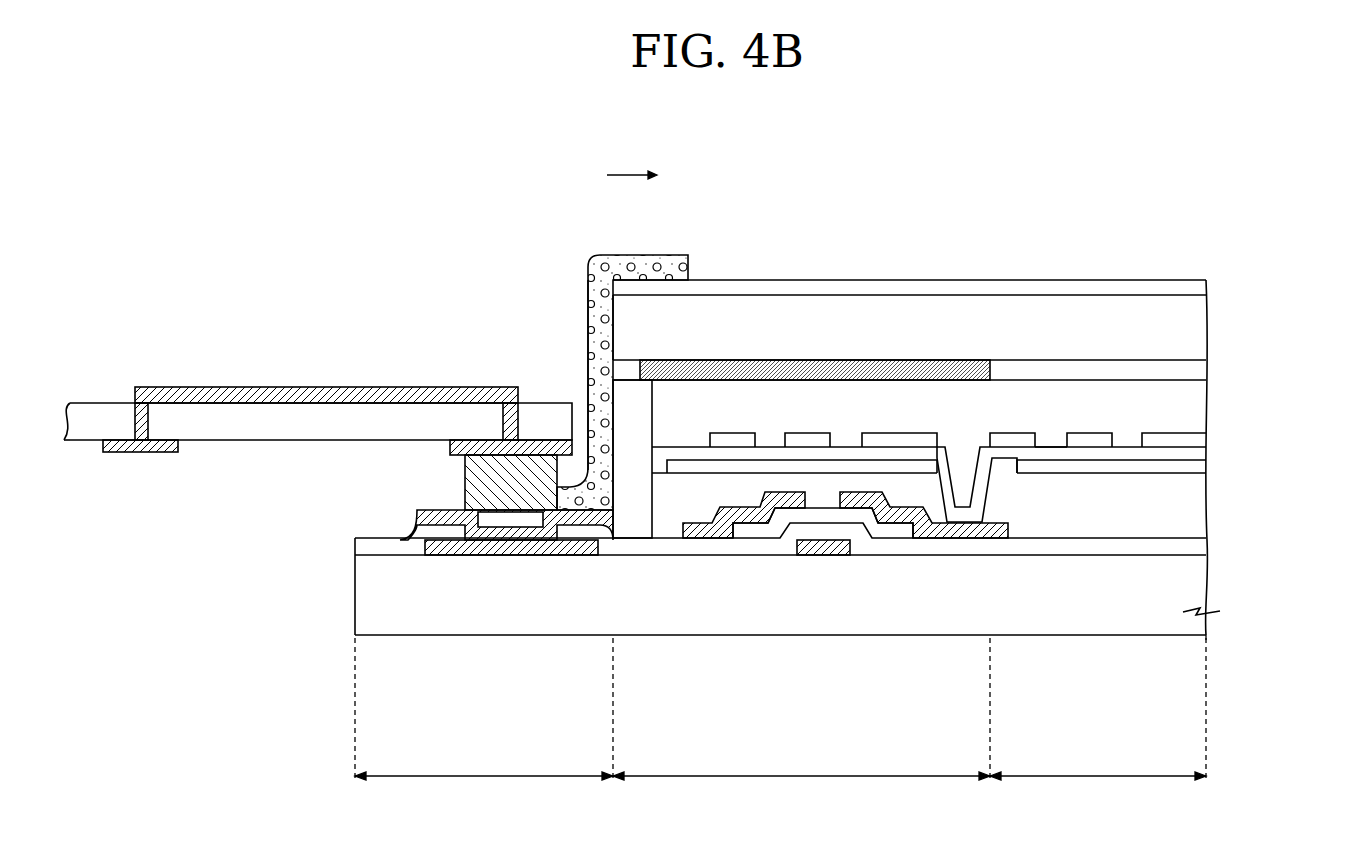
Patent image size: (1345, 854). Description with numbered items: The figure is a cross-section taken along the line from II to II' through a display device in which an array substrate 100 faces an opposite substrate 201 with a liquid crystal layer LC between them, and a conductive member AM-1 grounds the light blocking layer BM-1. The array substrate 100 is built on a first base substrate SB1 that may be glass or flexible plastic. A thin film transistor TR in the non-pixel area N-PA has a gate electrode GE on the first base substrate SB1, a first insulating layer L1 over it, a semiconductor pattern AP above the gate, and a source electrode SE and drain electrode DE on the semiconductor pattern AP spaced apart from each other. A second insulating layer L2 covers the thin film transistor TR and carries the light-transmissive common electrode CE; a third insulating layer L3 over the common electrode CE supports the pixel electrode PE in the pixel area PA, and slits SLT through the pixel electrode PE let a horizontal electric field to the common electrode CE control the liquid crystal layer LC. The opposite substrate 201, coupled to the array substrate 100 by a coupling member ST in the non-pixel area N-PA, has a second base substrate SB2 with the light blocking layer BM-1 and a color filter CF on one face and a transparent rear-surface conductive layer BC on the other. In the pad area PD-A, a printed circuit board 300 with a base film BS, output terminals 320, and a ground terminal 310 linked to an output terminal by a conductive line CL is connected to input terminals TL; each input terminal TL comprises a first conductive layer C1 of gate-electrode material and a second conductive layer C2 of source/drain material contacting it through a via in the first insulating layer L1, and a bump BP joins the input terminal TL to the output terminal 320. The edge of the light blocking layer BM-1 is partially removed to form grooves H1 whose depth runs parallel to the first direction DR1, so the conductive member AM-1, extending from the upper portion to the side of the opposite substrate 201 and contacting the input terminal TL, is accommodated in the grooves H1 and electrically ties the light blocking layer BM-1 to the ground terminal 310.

The printed circuit board 300 is at (502, 329).
The ground terminal 310 is at (166, 443).
The output terminals 320 is at (468, 440).
The conductive line CL is at (258, 392).
The base film BS is at (352, 413).
The grooves H1 is at (588, 371).
The bump BP is at (473, 481).
The conductive member AM-1 is at (660, 255).
The light blocking layer BM-1 is at (819, 365).
The first direction DR1 is at (632, 163).
The rear-surface conductive layer BC is at (1192, 292).
The second base substrate SB2 is at (1192, 330).
The opposite substrate 201 is at (1280, 283).
The color filter CF is at (1192, 368).
The liquid crystal layer LC is at (1195, 410).
The slits SLT is at (1050, 433).
The pixel electrode PE is at (1195, 443).
The third insulating layer L3 is at (1192, 452).
The common electrode CE is at (1195, 467).
The array substrate 100 is at (1280, 415).
The second insulating layer L2 is at (1195, 508).
The first insulating layer L1 is at (1195, 545).
The first base substrate SB1 is at (1192, 585).
The second conductive layer C2 is at (508, 545).
The first conductive layer C1 is at (573, 543).
The input terminals TL is at (592, 694).
The coupling member ST is at (630, 525).
The source electrode SE is at (708, 538).
The semiconductor pattern AP is at (760, 538).
The gate electrode GE is at (826, 548).
The drain electrode DE is at (922, 538).
The thin film transistor TR is at (705, 694).
The pad area PD-A is at (484, 720).
The non-pixel area N-PA is at (801, 720).
The pixel area PA is at (1098, 720).
The section line II-II' II is at (66, 461).
The section line II- II' is at (1221, 653).